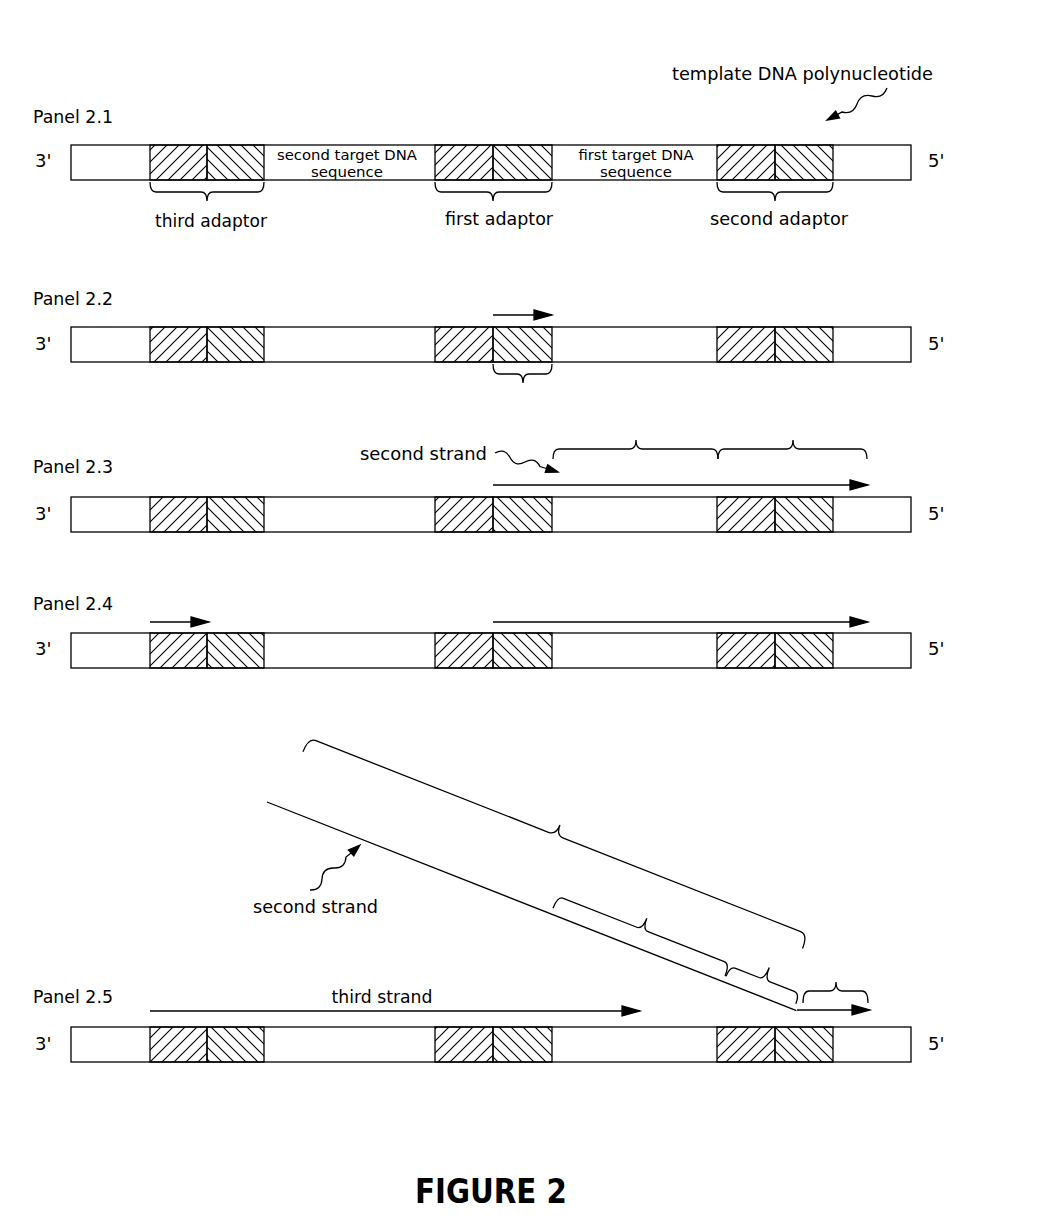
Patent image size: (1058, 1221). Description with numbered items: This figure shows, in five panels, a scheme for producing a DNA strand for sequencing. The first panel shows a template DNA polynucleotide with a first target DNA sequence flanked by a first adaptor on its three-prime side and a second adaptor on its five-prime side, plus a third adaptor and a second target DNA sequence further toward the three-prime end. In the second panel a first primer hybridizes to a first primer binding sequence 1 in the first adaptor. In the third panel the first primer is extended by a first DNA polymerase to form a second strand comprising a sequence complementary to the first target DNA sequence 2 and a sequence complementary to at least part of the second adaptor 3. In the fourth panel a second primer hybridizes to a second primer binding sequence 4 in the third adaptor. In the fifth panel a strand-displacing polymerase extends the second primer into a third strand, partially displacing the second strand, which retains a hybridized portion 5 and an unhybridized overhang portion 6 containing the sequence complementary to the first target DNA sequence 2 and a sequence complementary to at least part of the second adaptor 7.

The first primer binding sequence 1 is at (537, 351).
The sequence complementary to the first target DNA sequence 2 is at (643, 691).
The sequence complementary to at least part of the second adaptor 3 is at (792, 433).
The second primer binding sequence 4 is at (180, 636).
The hybridized portion 5 is at (835, 972).
The unhybridized overhang portion 6 is at (568, 868).
The sequence complementary to at least part of the second adaptor 7 is at (765, 968).